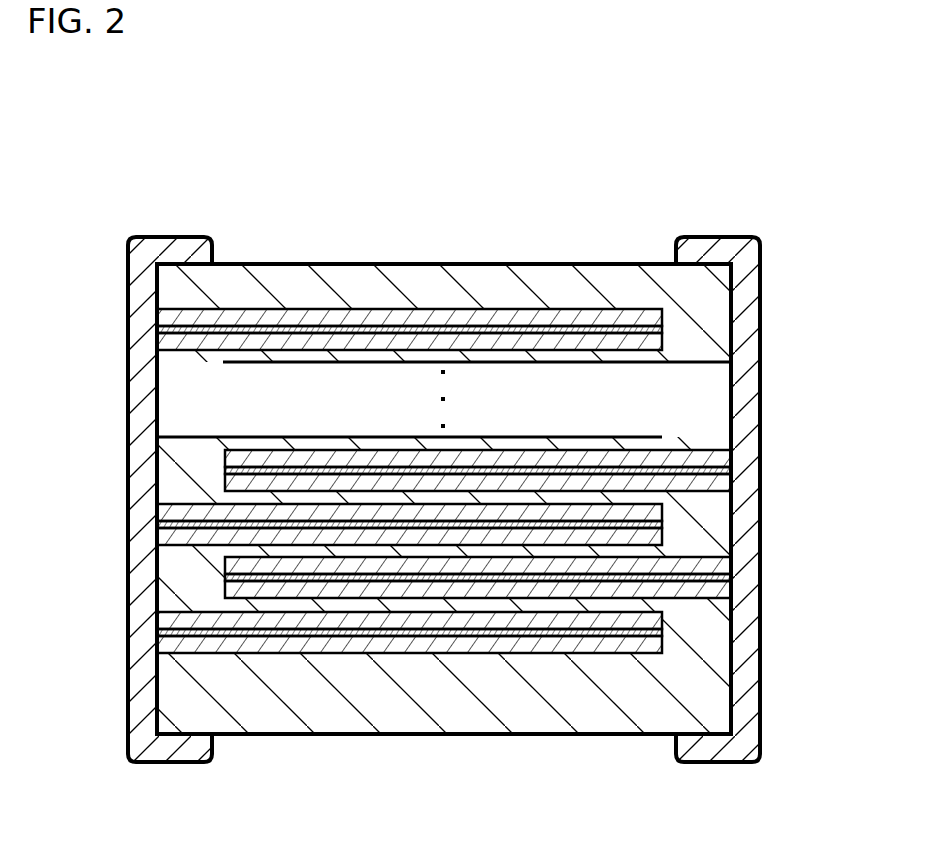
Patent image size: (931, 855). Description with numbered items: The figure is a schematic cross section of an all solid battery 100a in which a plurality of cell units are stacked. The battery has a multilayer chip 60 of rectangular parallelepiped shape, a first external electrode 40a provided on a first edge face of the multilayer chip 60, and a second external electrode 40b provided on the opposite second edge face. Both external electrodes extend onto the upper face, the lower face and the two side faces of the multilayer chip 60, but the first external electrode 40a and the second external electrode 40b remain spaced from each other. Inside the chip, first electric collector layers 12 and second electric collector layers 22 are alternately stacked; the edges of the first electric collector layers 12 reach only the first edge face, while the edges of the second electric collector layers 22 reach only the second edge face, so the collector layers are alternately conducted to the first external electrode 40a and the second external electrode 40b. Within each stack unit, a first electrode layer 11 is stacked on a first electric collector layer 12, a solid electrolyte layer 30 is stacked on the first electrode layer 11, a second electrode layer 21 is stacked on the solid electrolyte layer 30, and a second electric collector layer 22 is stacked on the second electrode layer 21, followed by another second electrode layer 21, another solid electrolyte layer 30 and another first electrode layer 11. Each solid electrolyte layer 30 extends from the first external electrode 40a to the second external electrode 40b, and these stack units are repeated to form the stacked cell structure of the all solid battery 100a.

The all solid battery 100a is at (452, 449).
The multilayer chip 60 is at (557, 250).
The solid electrolyte layer 30 is at (332, 607).
The first electrode layer 11 is at (168, 512).
The first electric collector layer 12 is at (168, 522).
The second electrode layer 21 is at (723, 563).
The second electric collector layer 22 is at (723, 577).
The first external electrode 40a is at (128, 341).
The second external electrode 40b is at (760, 341).